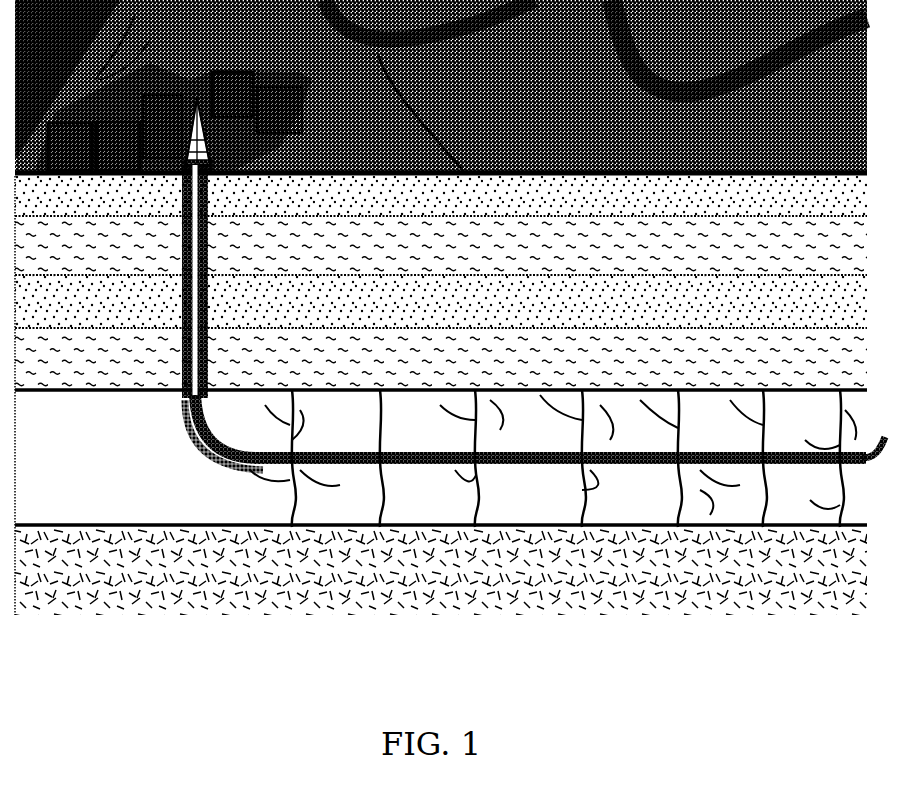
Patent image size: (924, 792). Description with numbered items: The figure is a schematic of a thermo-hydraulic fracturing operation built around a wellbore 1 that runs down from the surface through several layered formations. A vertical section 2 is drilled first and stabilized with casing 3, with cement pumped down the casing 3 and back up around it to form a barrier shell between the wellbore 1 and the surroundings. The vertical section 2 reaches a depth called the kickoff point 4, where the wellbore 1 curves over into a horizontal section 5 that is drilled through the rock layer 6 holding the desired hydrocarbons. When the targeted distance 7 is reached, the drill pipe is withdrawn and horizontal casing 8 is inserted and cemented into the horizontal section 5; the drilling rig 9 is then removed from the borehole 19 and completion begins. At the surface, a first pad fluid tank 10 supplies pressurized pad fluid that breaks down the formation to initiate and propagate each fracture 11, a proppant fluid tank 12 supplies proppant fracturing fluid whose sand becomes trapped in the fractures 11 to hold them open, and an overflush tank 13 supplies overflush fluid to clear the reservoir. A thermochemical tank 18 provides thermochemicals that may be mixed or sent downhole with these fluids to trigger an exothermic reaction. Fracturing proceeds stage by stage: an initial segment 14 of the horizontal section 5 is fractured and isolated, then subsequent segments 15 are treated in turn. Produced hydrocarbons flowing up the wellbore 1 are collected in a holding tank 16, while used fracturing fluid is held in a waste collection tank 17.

The wellbore 1 is at (167, 201).
The vertical section 2 is at (208, 232).
The casing 3 is at (208, 300).
The kickoff point 4 is at (192, 449).
The horizontal section 5 is at (418, 452).
The rock layer 6 is at (47, 450).
The targeted distance 7 is at (879, 438).
The horizontal casing 8 is at (346, 470).
The drilling rig 9 is at (198, 122).
The first pad fluid tank 10 is at (60, 160).
The fracture 11 is at (847, 445).
The proppant fluid tank 12 is at (108, 160).
The overflush tank 13 is at (153, 153).
The initial segment 14 is at (838, 416).
The subsequent segments 15 is at (683, 527).
The holding tank 16 is at (222, 105).
The waste collection tank 17 is at (270, 120).
The thermochemical tank 18 is at (167, 53).
The borehole 19 is at (214, 150).